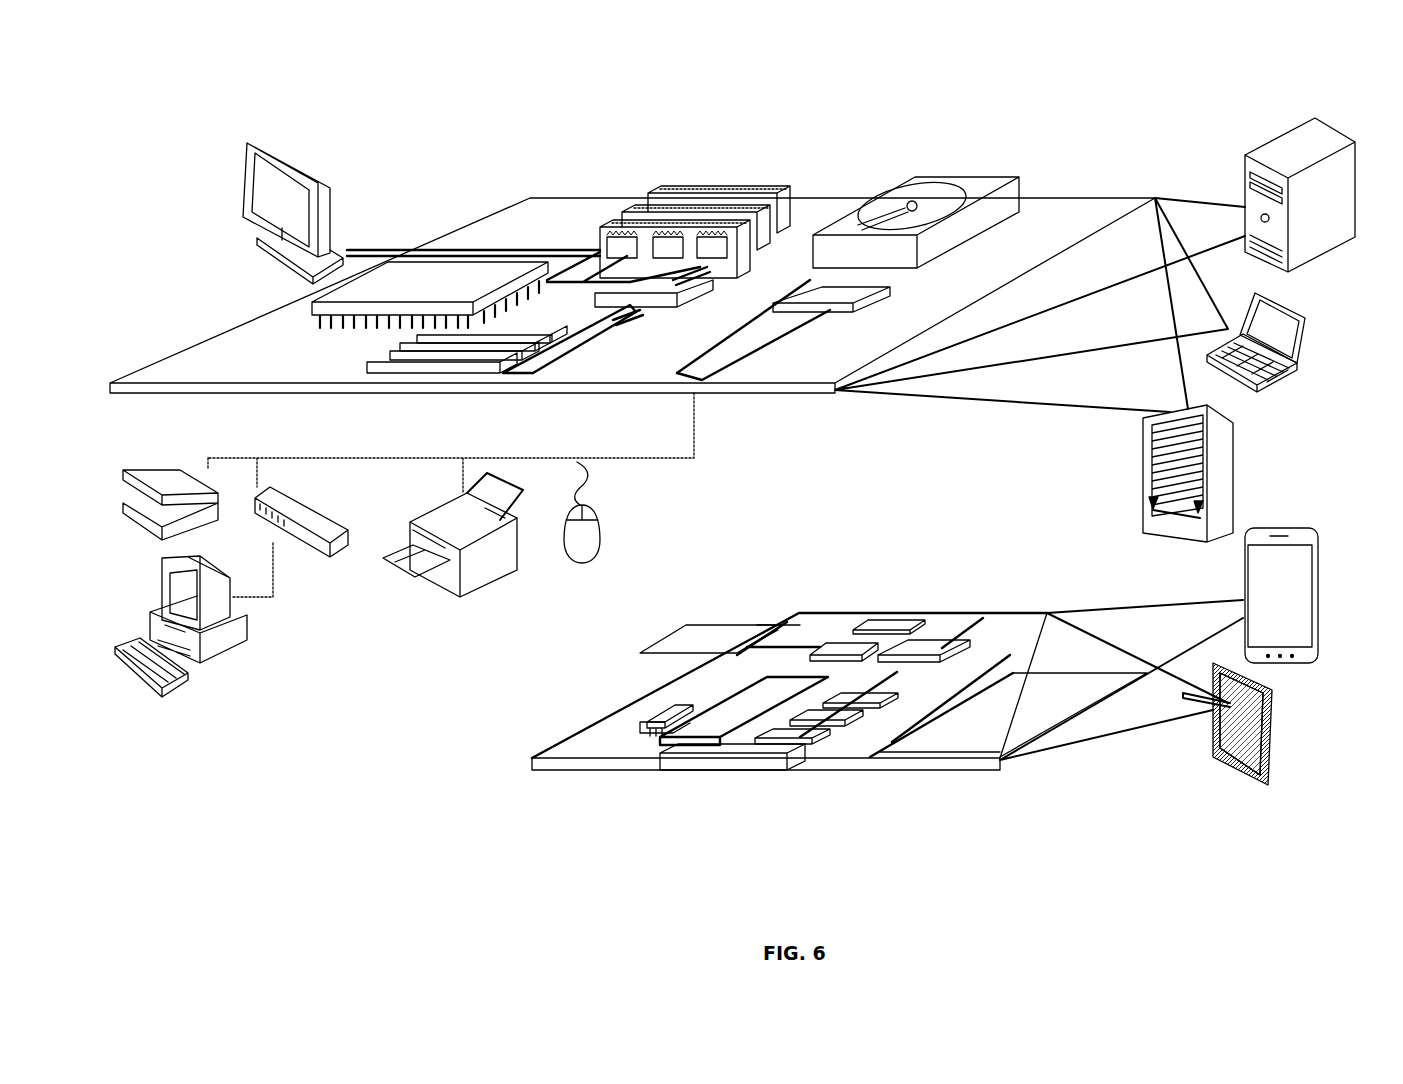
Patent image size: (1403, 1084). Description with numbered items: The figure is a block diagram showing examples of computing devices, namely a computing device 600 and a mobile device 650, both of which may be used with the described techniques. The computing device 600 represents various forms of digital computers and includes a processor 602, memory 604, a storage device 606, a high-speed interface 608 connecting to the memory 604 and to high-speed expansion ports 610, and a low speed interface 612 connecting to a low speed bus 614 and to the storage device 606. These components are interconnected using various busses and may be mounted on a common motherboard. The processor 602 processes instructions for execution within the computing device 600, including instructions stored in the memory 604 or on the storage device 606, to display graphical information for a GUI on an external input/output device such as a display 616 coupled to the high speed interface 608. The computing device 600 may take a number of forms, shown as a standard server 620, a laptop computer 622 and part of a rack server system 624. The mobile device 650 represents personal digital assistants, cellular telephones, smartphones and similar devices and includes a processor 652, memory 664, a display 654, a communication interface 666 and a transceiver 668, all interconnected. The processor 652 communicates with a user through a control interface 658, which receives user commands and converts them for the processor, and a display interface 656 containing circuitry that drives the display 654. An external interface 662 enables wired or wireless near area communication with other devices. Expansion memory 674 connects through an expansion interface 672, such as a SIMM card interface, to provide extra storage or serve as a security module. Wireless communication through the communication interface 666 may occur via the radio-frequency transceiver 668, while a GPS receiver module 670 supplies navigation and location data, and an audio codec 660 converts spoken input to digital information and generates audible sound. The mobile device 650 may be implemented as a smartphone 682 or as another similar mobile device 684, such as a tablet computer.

The computing device 600 is at (343, 103).
The processor 602 is at (312, 306).
The memory 604 is at (650, 193).
The storage device 606 is at (922, 203).
The high-speed interface 608 is at (630, 290).
The high-speed expansion ports 610 is at (390, 357).
The low speed interface 612 is at (813, 297).
The low speed bus 614 is at (710, 383).
The display 616 is at (247, 152).
The standard server 620 is at (1238, 168).
The laptop computer 622 is at (1312, 325).
The rack server system 624 is at (1143, 496).
The mobile device 650 is at (500, 772).
The processor 652 is at (717, 730).
The display 654 is at (967, 747).
The display interface 656 is at (790, 740).
The control interface 658 is at (838, 722).
The audio codec 660 is at (860, 700).
The external interface 662 is at (680, 760).
The memory 664 is at (647, 723).
The communication interface 666 is at (845, 648).
The transceiver 668 is at (925, 650).
The GPS receiver module 670 is at (897, 622).
The expansion interface 672 is at (770, 625).
The expansion memory 674 is at (693, 627).
The smartphone 682 is at (1320, 567).
The tablet device 684 is at (1220, 767).